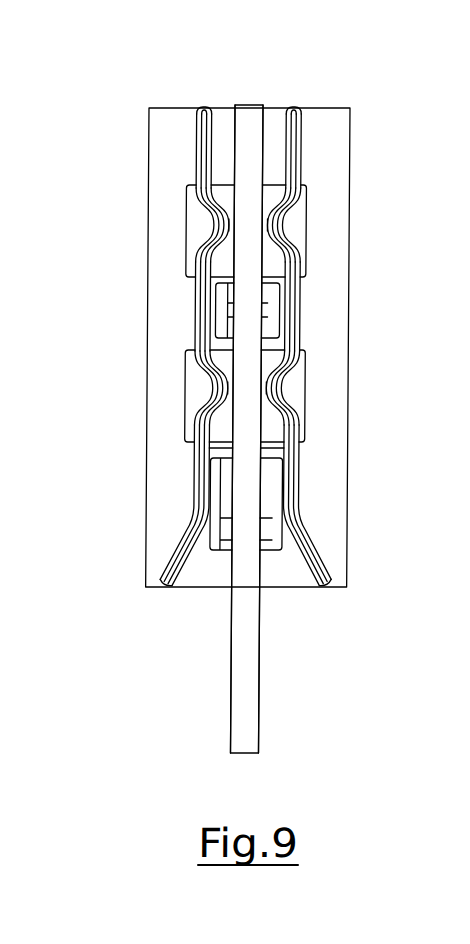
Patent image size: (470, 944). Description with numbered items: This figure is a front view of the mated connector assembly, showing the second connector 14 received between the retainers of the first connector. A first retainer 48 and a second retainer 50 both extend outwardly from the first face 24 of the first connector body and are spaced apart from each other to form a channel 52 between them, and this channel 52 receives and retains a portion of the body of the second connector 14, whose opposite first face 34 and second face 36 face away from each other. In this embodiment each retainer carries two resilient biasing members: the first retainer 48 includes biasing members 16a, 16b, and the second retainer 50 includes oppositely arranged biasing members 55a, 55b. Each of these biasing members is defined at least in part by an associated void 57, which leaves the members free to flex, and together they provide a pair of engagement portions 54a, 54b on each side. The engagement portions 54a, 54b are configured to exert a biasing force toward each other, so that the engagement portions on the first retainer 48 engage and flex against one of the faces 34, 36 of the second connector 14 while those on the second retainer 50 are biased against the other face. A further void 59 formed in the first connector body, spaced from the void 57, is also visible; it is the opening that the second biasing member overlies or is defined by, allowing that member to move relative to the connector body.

The second connector 14 is at (235, 650).
The first face 34 is at (235, 692).
The second face 36 is at (262, 690).
The first face 24 is at (163, 138).
The first retainer 48 is at (140, 317).
The second retainer 50 is at (362, 337).
The channel 52 is at (275, 117).
The void 57 is at (194, 212).
The void 59 is at (218, 321).
The biasing member 16a is at (197, 240).
The biasing member 16b is at (198, 414).
The engagement portion 54a is at (243, 227).
The engagement portion 54b is at (255, 220).
The biasing member 55a is at (306, 204).
The biasing member 55b is at (307, 371).